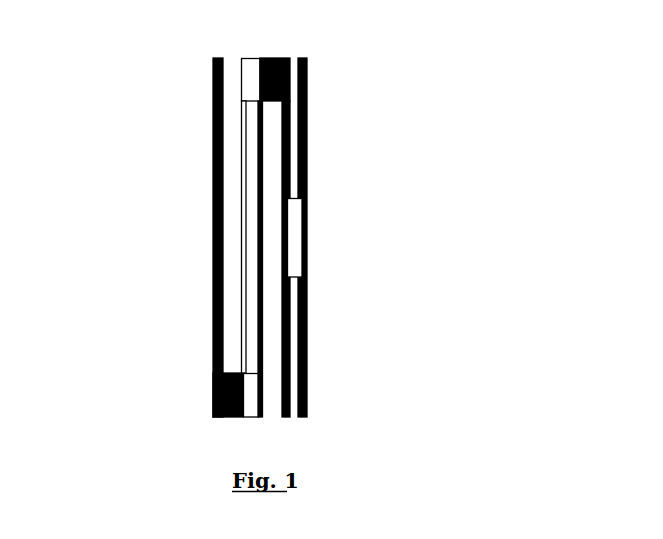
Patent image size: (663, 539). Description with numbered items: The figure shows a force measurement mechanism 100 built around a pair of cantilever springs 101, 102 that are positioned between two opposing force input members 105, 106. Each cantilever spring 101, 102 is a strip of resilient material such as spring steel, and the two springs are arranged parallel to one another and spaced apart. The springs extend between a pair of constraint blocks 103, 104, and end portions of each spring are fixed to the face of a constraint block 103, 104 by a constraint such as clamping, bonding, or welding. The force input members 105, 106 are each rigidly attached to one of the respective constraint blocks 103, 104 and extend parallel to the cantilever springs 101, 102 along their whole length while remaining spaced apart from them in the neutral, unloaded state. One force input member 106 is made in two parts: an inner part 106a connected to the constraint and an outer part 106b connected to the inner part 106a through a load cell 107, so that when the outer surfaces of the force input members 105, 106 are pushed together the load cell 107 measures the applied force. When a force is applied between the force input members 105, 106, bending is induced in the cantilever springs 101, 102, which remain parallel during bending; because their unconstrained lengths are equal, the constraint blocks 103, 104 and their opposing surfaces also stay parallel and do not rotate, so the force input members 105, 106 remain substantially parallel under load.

The force measurement mechanism 100 is at (391, 74).
The cantilever spring 101 is at (243, 145).
The cantilever spring 102 is at (258, 185).
The constraint block 103 is at (252, 83).
The constraint block 104 is at (255, 404).
The force input member 105 is at (213, 341).
The force input member 106 is at (308, 182).
The inner part 106a is at (285, 58).
The outer part 106b is at (307, 58).
The load cell 107 is at (298, 237).